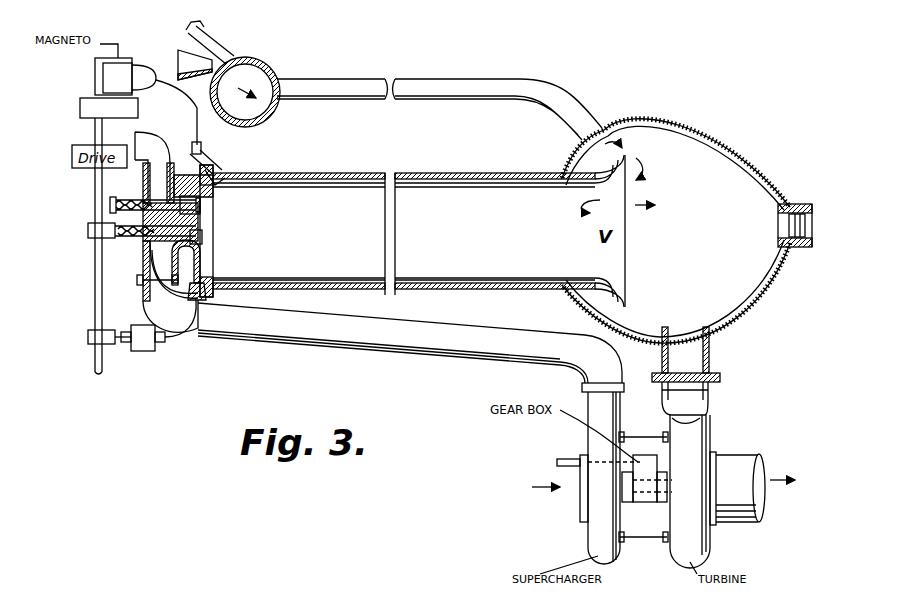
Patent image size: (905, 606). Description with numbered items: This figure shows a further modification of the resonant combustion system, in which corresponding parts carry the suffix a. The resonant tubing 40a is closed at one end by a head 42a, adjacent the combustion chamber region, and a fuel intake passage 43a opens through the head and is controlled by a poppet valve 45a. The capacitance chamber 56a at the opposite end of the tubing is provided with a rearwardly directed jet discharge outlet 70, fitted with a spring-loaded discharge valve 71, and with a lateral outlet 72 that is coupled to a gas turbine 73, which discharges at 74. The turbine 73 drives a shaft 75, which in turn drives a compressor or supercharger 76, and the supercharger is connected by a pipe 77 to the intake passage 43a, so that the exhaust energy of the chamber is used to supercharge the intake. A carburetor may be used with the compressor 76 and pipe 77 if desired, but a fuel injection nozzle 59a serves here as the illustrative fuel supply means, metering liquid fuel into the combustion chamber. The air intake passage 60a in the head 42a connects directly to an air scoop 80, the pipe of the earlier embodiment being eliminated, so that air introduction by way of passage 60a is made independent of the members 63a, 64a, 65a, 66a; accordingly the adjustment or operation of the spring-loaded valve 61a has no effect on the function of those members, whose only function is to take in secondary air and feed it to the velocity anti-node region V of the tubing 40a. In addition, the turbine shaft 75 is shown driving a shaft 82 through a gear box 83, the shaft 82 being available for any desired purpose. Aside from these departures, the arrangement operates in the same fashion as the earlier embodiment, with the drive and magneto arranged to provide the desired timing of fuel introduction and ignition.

The resonant tubing 40a is at (436, 173).
The head 42a is at (199, 258).
The intake passage 43a is at (158, 265).
The poppet valve 45a is at (200, 238).
The capacitance chamber 56a is at (716, 142).
The fuel injection nozzle 59a is at (205, 305).
The air intake passage 60a is at (128, 202).
The spring-loaded valve 61a is at (199, 205).
The secondary air member 63a is at (272, 66).
The secondary air member 64a is at (338, 80).
The secondary air member 65a is at (182, 58).
The secondary air member 66a is at (220, 60).
The jet discharge outlet 70 is at (800, 204).
The spring-loaded discharge valve 71 is at (790, 227).
The lateral outlet 72 is at (712, 352).
The gas turbine 73 is at (688, 446).
The turbine discharge 74 is at (763, 471).
The turbine shaft 75 is at (662, 499).
The supercharger 76 is at (597, 532).
The pipe 77 is at (443, 347).
The air scoop 80 is at (153, 146).
The shaft 82 is at (570, 455).
The gear box 83 is at (643, 452).